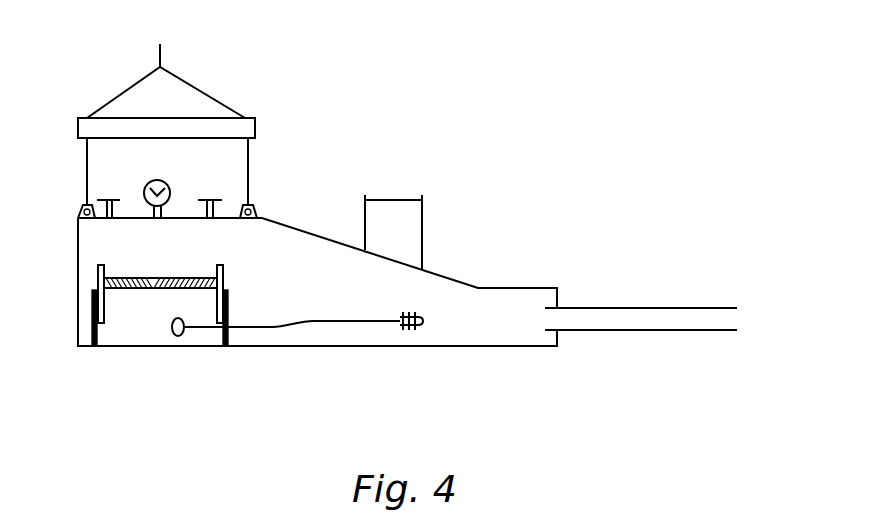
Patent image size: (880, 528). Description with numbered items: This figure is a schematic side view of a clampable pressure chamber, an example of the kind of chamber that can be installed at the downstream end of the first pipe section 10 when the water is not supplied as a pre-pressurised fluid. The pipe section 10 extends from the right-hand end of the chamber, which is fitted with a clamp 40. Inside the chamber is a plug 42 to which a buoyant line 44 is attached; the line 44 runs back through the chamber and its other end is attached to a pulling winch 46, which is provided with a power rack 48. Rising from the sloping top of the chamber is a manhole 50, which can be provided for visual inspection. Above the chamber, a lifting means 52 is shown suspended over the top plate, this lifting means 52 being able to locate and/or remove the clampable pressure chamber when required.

The first pipe section 10 is at (660, 330).
The clamp 40 is at (557, 297).
The plug 42 is at (401, 325).
The buoyant line 44 is at (307, 323).
The pulling winch 46 is at (130, 288).
The power rack 48 is at (93, 333).
The manhole 50 is at (422, 207).
The lifting means 52 is at (255, 127).